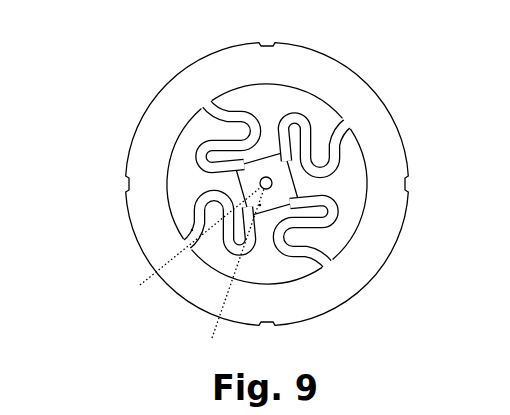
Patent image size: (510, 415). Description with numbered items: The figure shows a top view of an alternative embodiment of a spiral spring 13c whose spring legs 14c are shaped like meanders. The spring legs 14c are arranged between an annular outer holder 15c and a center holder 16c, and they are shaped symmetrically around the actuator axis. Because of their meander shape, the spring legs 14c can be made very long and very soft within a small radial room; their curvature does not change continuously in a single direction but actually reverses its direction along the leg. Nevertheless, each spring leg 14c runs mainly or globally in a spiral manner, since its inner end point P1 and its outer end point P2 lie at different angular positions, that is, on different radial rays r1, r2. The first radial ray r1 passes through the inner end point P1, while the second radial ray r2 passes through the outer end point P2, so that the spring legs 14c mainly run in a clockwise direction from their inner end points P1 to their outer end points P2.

The spiral spring 13c is at (130, 58).
The spring legs 14c is at (193, 215).
The annular outer holder 15c is at (360, 88).
The center holder 16c is at (275, 200).
The inner end point P1 is at (260, 205).
The outer end point P2 is at (192, 230).
The first radial ray r1 is at (221, 274).
The second radial ray r2 is at (186, 247).